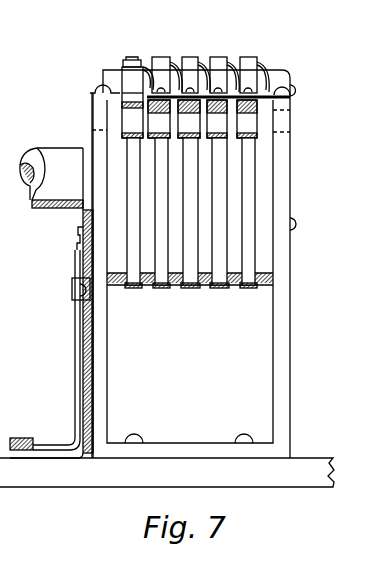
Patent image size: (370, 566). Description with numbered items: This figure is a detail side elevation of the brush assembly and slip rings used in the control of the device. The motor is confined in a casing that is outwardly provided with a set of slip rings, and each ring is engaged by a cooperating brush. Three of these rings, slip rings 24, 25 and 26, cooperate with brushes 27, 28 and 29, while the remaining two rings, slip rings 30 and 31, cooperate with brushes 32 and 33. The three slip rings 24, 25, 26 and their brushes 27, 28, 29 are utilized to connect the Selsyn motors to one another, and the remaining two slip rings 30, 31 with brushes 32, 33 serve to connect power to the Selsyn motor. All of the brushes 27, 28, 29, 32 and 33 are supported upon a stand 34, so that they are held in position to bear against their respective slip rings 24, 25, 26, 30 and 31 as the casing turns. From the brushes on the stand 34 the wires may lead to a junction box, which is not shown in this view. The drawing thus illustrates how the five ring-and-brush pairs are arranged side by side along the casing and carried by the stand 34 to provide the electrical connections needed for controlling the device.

The slip ring 24 is at (250, 290).
The slip ring 25 is at (220, 290).
The slip ring 26 is at (192, 290).
The brush 27 is at (252, 53).
The brush 28 is at (222, 55).
The brush 29 is at (187, 55).
The slip ring 30 is at (163, 290).
The slip ring 31 is at (135, 290).
The brush 32 is at (162, 55).
The brush 33 is at (130, 57).
The stand 34 is at (289, 313).